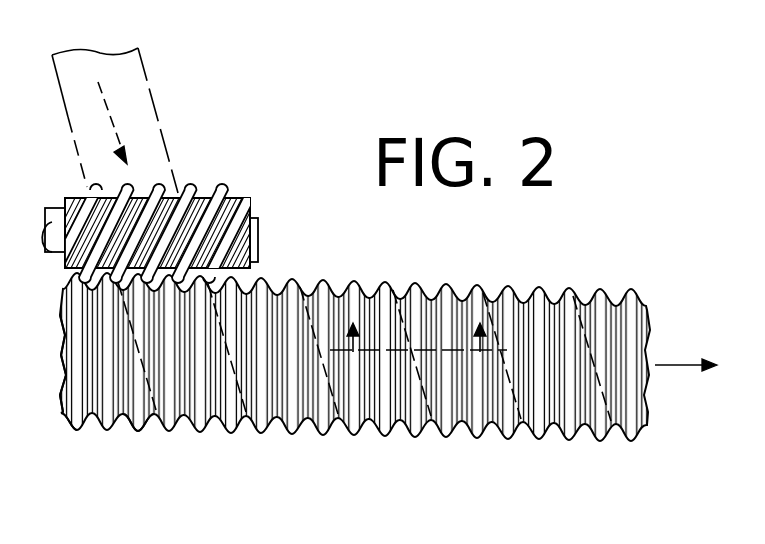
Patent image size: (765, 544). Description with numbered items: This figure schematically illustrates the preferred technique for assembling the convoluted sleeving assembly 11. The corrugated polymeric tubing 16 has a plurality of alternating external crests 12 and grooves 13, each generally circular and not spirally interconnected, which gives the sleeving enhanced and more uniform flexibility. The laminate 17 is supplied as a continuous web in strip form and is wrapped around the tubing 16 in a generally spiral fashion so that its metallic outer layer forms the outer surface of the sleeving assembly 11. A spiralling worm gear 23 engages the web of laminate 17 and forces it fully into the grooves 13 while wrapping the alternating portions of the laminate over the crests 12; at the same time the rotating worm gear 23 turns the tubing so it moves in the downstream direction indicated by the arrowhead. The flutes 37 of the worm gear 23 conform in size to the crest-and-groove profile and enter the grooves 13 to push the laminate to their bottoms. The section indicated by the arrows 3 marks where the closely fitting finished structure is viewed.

The convoluted sleeving assembly 11 is at (597, 279).
The external crests 12 is at (140, 420).
The grooves 13 is at (90, 412).
The corrugated polymeric tubing 16 is at (80, 343).
The laminate 17 is at (134, 77).
The worm gear 23 is at (238, 210).
The flutes 37 is at (221, 184).
The section line 3- 3 is at (418, 354).